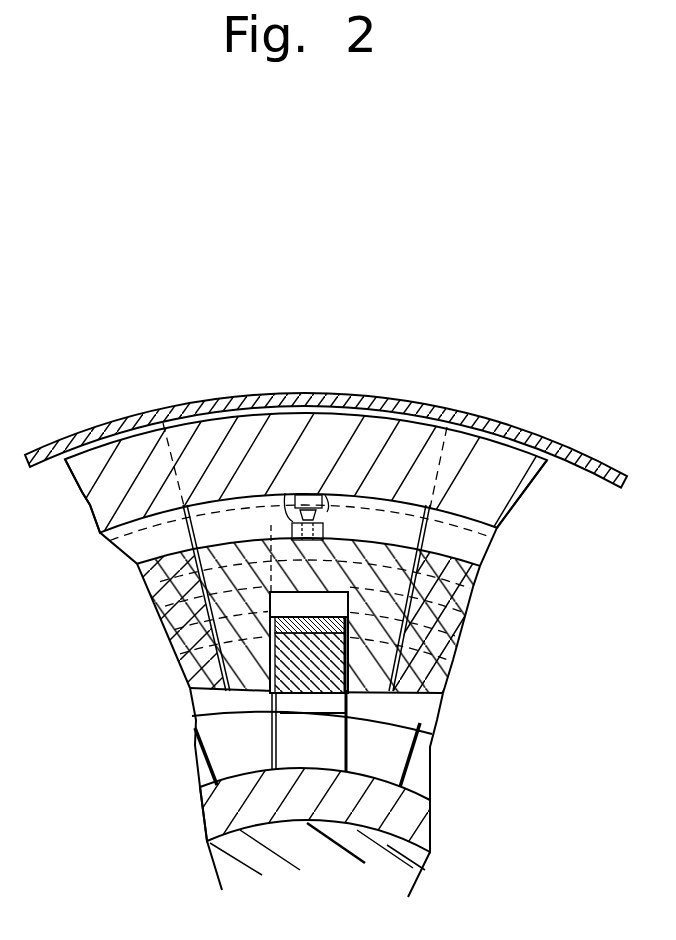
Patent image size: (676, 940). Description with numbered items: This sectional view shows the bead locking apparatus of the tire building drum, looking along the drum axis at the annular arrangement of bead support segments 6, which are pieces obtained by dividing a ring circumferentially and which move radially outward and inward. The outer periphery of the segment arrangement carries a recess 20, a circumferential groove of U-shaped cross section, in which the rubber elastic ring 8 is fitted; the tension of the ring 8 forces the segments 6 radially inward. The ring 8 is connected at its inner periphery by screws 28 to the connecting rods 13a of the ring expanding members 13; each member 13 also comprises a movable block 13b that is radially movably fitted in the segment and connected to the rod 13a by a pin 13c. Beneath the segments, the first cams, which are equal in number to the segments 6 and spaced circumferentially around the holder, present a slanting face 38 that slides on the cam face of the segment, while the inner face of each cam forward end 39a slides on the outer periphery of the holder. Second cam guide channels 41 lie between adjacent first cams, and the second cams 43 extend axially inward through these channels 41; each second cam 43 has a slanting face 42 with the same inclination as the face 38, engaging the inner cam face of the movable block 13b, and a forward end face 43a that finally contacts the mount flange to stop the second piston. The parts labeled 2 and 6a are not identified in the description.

The outer ring 2 is at (487, 425).
The bead support segments 6 is at (404, 540).
The lamination segments 6a is at (115, 423).
The elastic ring 8 is at (371, 449).
The ring expanding members 13 is at (527, 603).
The connecting rod 13a is at (288, 522).
The movable block 13b is at (350, 655).
The pin 13c is at (350, 625).
The recess 20 is at (240, 497).
The screws 28 is at (322, 492).
The slanting face 38 is at (203, 714).
The forward end 39a is at (203, 755).
The second cam guide channels 41 is at (278, 718).
The slanting face 42 is at (348, 716).
The second cams 43 is at (275, 688).
The forward end faces 43a is at (417, 773).